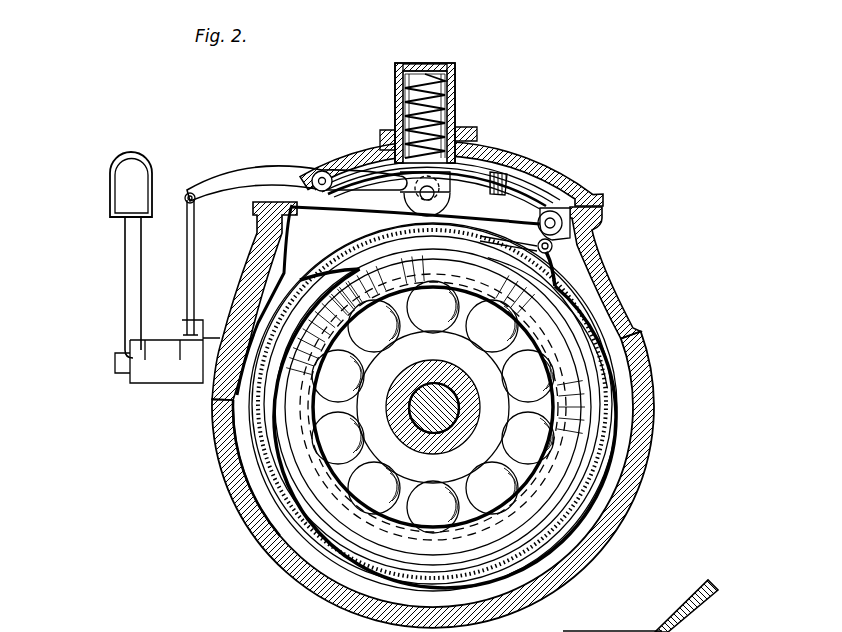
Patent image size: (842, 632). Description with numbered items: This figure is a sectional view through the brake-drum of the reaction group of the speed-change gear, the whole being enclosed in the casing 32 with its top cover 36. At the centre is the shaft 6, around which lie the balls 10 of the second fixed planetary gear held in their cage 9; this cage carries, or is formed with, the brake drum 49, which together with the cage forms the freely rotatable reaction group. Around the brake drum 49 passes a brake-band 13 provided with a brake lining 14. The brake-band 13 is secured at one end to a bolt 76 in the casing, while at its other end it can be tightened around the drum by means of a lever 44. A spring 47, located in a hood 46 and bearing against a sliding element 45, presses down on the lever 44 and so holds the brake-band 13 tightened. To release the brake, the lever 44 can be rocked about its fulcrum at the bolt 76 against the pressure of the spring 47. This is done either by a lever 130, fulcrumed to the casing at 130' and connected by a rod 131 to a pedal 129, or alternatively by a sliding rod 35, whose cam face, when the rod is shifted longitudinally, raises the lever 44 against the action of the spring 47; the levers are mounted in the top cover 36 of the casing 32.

The shaft 6 is at (424, 428).
The cage 9 is at (366, 398).
The balls 10 is at (534, 418).
The brake-band 13 is at (586, 284).
The brake lining 14 is at (592, 310).
The casing 32 is at (262, 283).
The sliding rod 35 is at (528, 176).
The top cover 36 is at (488, 148).
The lever 44 is at (482, 180).
The sliding element 45 is at (452, 102).
The hood 46 is at (440, 62).
The spring 47 is at (450, 80).
The brake drum 49 is at (602, 342).
The bolt 76 is at (562, 228).
The pedal 129 is at (120, 171).
The lever 130 is at (297, 154).
The fulcrum 130' is at (310, 156).
The rod 131 is at (190, 252).